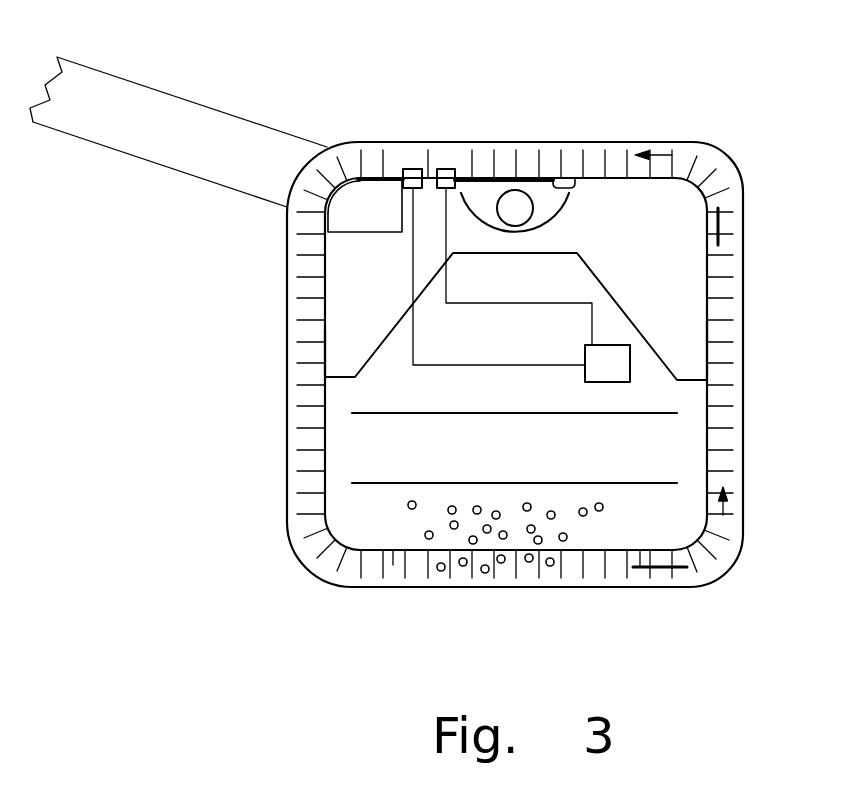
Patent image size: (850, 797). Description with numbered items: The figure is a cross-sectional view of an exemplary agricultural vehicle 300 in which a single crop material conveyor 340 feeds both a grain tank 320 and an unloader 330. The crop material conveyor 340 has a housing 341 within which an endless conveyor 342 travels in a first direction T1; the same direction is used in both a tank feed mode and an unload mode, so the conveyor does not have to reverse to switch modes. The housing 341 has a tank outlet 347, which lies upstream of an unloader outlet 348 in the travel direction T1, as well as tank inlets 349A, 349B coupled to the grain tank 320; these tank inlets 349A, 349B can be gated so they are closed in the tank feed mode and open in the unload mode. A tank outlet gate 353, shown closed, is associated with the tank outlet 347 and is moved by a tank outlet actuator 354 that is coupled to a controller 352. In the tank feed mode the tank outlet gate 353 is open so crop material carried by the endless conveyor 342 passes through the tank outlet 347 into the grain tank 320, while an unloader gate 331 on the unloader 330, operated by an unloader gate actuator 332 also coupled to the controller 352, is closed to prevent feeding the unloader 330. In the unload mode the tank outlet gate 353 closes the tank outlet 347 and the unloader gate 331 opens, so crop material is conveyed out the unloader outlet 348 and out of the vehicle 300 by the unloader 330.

The agricultural vehicle 300 is at (560, 421).
The grain tank 320 is at (633, 259).
The unloader 330 is at (173, 72).
The unloader gate 331 is at (307, 163).
The unloader gate actuator 332 is at (414, 169).
The crop material conveyor 340 is at (558, 365).
The housing 341 is at (743, 393).
The endless conveyor 342 is at (726, 461).
The tank outlet 347 is at (540, 177).
The unloader outlet 348 is at (373, 202).
The tank inlet 349A is at (327, 358).
The tank inlet 349B is at (707, 350).
The controller 352 is at (598, 383).
The tank outlet gate 353 is at (576, 187).
The tank outlet actuator 354 is at (446, 169).
The first direction T1 is at (700, 178).